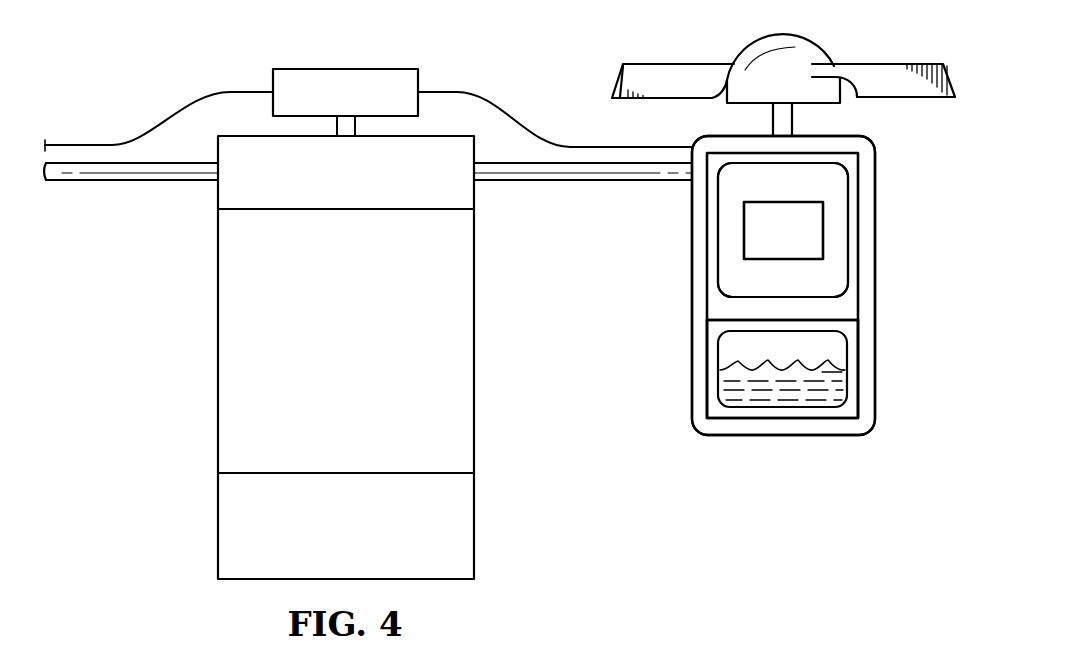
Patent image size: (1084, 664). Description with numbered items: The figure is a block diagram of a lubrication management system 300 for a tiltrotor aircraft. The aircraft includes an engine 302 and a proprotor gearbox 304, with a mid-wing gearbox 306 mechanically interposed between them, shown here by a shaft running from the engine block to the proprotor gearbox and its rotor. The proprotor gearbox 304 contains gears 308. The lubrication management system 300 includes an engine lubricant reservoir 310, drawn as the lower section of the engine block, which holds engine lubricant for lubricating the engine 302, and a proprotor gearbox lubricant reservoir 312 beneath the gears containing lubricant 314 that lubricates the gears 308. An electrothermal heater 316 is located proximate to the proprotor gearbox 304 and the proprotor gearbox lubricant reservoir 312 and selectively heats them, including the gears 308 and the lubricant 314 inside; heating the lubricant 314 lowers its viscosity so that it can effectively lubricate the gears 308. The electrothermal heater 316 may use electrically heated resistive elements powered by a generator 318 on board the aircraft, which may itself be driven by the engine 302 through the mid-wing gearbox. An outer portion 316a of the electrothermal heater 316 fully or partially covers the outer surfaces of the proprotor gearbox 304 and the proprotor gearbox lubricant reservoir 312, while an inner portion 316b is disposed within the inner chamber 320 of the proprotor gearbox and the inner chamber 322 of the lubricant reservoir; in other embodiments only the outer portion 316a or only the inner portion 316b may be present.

The lubrication management system 300 is at (130, 100).
The engine 302 is at (227, 343).
The proprotor gearbox 304 is at (858, 198).
The mid-wing gearbox 306 is at (227, 195).
The gears 308 is at (823, 237).
The engine lubricant reservoir 310 is at (227, 527).
The proprotor gearbox lubricant reservoir 312 is at (858, 372).
The lubricant 314 is at (783, 397).
The electrothermal heater 316 is at (692, 287).
The outer portion 316a is at (875, 285).
The inner portion 316b is at (727, 237).
The generator 318 is at (345, 69).
The inner chamber 320 is at (840, 177).
The inner chamber 322 is at (728, 345).